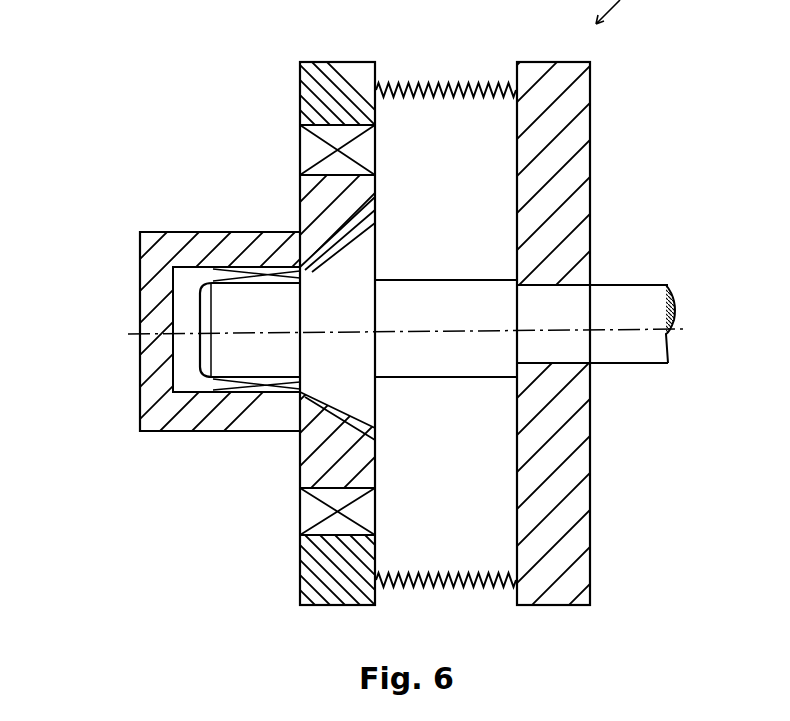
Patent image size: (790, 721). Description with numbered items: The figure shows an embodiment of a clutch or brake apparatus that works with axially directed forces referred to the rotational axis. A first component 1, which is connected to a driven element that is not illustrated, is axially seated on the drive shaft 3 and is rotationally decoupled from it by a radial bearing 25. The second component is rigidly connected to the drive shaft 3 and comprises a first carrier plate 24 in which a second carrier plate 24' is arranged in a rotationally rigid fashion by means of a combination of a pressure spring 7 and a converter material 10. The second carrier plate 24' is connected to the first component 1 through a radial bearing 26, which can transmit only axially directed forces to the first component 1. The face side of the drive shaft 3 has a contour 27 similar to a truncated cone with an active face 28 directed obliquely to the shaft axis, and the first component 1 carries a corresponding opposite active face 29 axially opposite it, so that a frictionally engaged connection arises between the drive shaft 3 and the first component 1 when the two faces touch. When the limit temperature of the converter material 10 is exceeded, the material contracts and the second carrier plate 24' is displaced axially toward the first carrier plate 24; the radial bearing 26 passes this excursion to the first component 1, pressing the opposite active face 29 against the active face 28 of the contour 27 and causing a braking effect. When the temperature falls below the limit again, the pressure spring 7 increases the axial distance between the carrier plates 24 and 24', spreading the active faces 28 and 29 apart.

The first component 1 is at (152, 293).
The drive shaft 3 is at (648, 310).
The pressure spring 7 is at (462, 80).
The converter material 10 is at (433, 92).
The first carrier plate 24 is at (609, 328).
The second carrier plate 24' is at (310, 306).
The radial bearing 25 is at (215, 393).
The radial bearing 26 is at (320, 153).
The contour 27 is at (283, 329).
The active face 28 is at (295, 430).
The opposite active face 29 is at (365, 405).